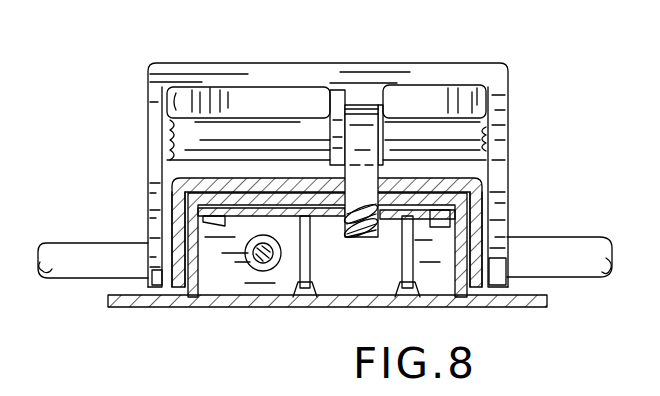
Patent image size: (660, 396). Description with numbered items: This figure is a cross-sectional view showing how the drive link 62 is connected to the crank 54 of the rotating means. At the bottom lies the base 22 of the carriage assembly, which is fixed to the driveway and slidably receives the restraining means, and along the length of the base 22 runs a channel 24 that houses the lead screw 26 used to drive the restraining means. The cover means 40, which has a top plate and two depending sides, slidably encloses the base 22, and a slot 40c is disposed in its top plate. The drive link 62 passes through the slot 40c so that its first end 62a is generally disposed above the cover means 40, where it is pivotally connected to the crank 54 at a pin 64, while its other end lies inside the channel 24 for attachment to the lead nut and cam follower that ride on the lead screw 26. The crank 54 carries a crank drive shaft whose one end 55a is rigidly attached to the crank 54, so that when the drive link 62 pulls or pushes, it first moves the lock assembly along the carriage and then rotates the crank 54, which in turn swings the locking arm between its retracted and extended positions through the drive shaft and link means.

The base 22 is at (183, 193).
The channel 24 is at (388, 162).
The lead screw 26 is at (262, 268).
The cover means 40 is at (508, 200).
The slot 40c is at (330, 153).
The crank 54 is at (512, 66).
The one end of crank drive shaft 55a is at (65, 280).
The drive link 62 is at (370, 154).
The first end of drive link 62a is at (365, 110).
The pin 64 is at (330, 97).